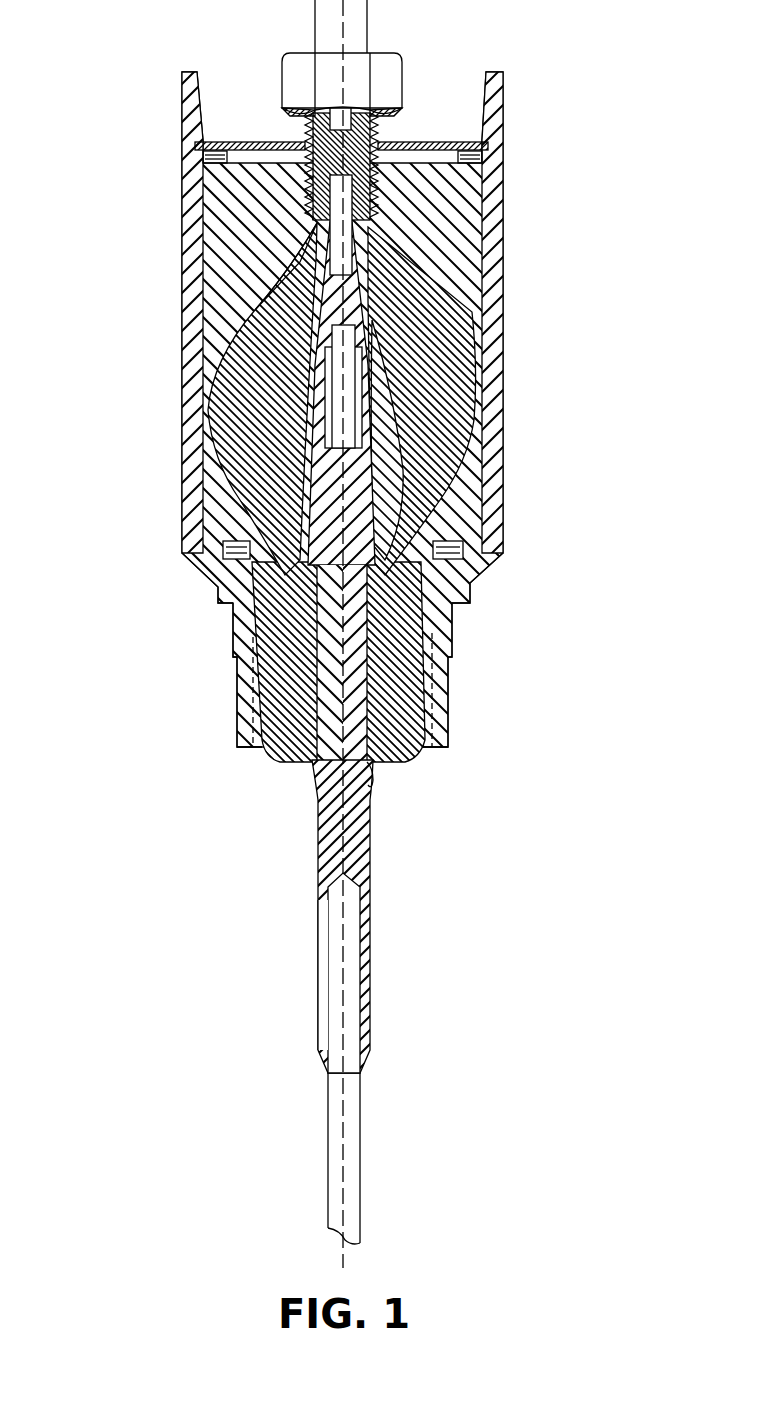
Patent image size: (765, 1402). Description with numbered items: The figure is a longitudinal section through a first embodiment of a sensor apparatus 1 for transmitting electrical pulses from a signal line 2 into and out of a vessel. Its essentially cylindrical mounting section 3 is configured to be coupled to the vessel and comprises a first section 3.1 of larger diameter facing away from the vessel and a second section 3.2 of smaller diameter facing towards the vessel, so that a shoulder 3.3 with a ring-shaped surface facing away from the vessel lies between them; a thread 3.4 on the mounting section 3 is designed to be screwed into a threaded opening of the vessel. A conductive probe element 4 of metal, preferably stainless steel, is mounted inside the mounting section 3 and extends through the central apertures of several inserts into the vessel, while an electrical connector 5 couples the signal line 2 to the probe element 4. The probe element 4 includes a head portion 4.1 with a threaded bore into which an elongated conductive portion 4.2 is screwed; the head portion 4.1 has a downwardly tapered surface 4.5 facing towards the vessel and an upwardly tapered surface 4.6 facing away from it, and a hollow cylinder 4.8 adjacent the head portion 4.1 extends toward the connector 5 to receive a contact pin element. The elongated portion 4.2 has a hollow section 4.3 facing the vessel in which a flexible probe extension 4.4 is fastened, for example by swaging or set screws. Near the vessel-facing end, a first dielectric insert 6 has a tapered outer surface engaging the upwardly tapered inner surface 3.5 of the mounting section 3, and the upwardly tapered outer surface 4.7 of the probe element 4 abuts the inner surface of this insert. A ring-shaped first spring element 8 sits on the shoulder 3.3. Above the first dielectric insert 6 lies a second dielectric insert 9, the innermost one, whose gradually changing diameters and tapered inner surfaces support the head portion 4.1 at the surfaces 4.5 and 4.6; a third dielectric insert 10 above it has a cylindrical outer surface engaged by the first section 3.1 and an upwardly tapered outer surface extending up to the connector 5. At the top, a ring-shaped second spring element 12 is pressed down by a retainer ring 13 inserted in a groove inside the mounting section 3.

The sensor apparatus 1 is at (125, 66).
The signal line 2 is at (330, 28).
The mounting section 3 is at (495, 342).
The first section 3.1 is at (503, 236).
The second section 3.2 is at (445, 633).
The shoulder 3.3 is at (218, 593).
The thread 3.4 is at (443, 690).
The upwardly tapered inner surface 3.5 is at (410, 748).
The probe element 4 is at (335, 505).
The head portion 4.1 is at (378, 380).
The elongated conductive portion 4.2 is at (332, 851).
The hollow section 4.3 is at (336, 971).
The flexible probe extension 4.4 is at (330, 1168).
The downwardly tapered surface 4.5 is at (412, 485).
The upwardly tapered surface 4.6 is at (380, 322).
The upwardly tapered outer surface 4.7 is at (368, 780).
The hollow cylinder 4.8 is at (310, 232).
The electrical connector 5 is at (295, 82).
The first dielectric insert 6 is at (290, 715).
The first spring element 8 is at (222, 548).
The second dielectric insert 9 is at (445, 547).
The third dielectric insert 10 is at (255, 335).
The second spring element 12 is at (475, 152).
The retainer ring 13 is at (200, 143).